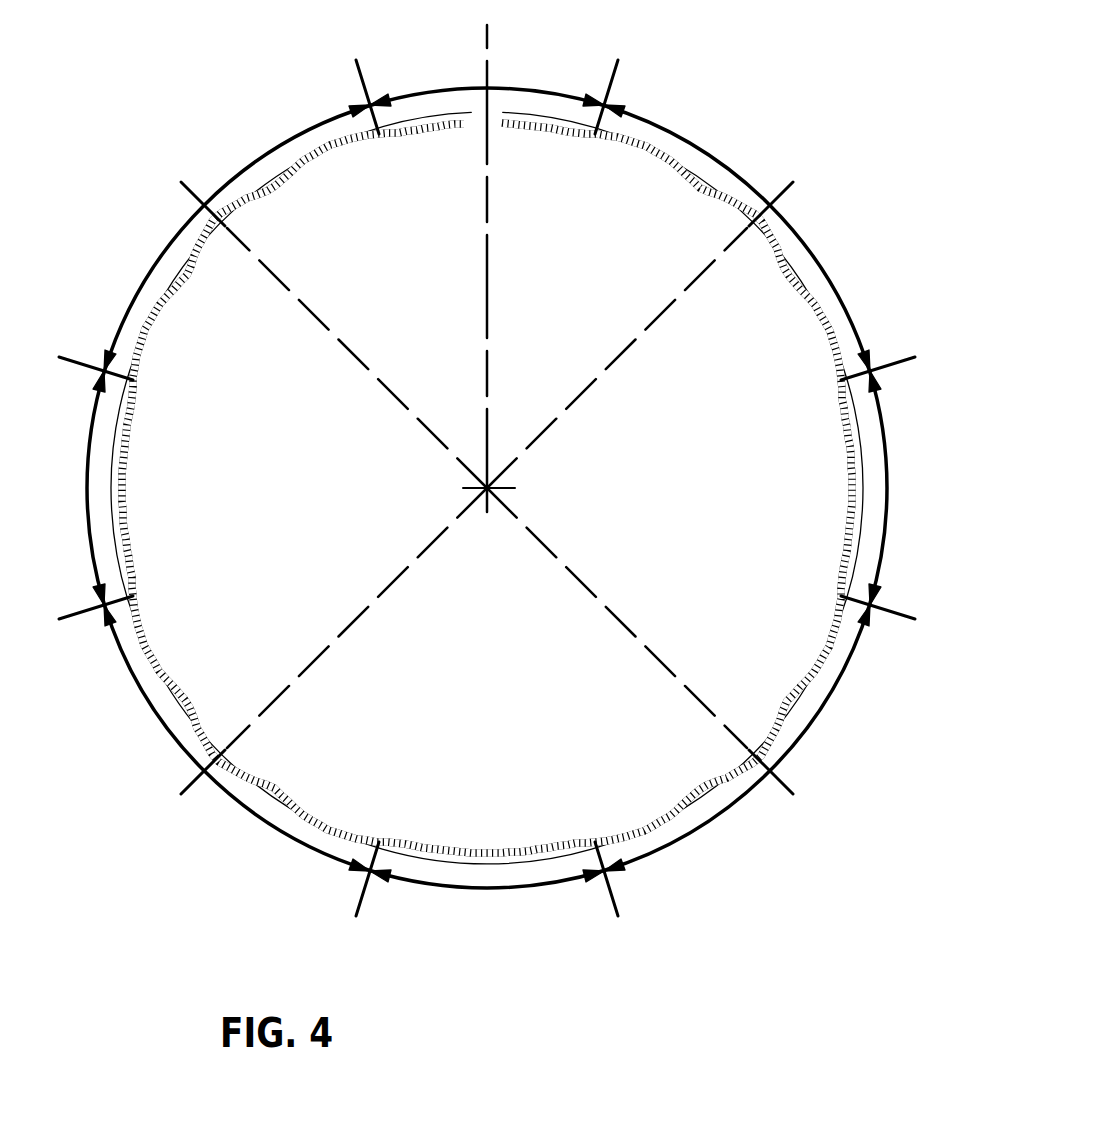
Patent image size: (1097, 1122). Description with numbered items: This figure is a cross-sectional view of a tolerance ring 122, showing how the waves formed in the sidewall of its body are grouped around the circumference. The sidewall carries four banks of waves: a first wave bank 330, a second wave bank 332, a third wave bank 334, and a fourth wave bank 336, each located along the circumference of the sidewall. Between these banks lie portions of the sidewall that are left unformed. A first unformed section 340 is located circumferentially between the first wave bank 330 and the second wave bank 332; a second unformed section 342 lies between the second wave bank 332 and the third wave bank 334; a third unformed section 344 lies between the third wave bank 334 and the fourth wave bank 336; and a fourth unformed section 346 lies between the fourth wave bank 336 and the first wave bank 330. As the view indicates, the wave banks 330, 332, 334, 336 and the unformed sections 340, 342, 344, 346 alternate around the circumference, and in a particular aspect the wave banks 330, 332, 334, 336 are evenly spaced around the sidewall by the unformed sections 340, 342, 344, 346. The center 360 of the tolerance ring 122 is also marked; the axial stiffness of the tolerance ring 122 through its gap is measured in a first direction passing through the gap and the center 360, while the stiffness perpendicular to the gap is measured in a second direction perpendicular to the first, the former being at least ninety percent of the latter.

The tolerance ring 122 is at (487, 480).
The first wave bank 330 is at (288, 138).
The second wave bank 332 is at (770, 207).
The third wave bank 334 is at (707, 823).
The fourth wave bank 336 is at (257, 817).
The first unformed section 340 is at (512, 86).
The second unformed section 342 is at (885, 490).
The third unformed section 344 is at (520, 888).
The fourth unformed section 346 is at (88, 488).
The center 360 is at (487, 488).